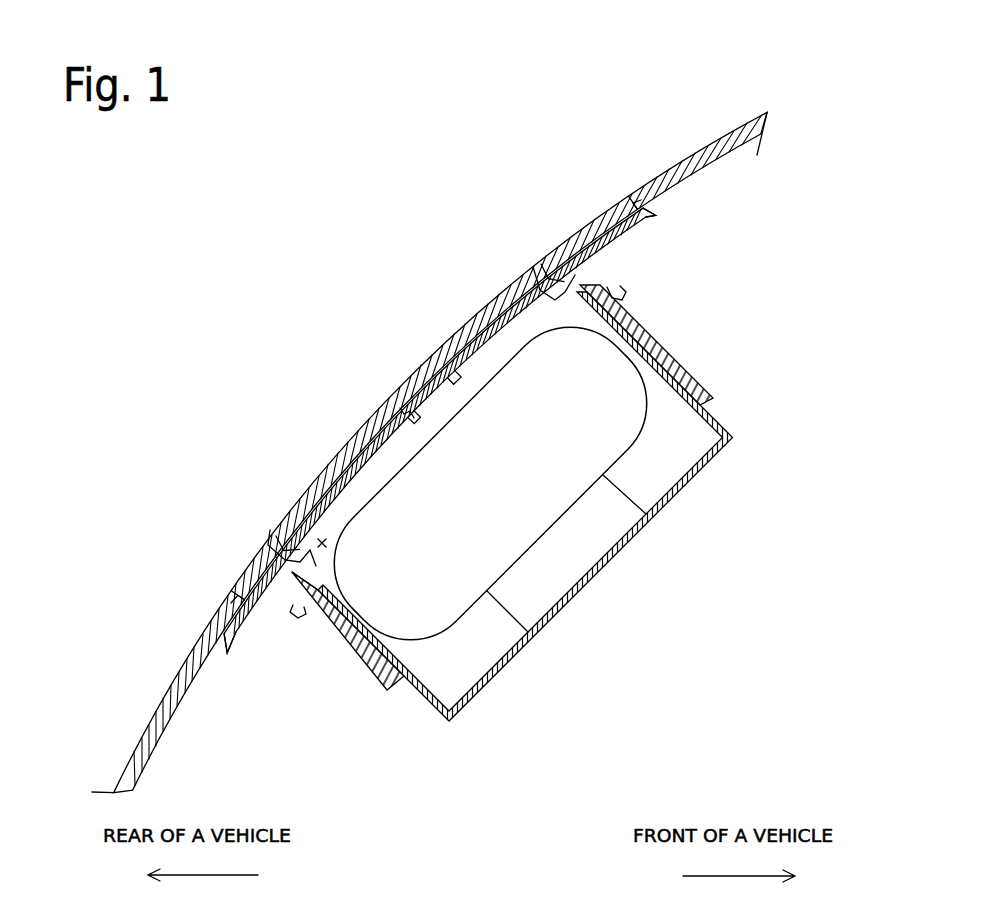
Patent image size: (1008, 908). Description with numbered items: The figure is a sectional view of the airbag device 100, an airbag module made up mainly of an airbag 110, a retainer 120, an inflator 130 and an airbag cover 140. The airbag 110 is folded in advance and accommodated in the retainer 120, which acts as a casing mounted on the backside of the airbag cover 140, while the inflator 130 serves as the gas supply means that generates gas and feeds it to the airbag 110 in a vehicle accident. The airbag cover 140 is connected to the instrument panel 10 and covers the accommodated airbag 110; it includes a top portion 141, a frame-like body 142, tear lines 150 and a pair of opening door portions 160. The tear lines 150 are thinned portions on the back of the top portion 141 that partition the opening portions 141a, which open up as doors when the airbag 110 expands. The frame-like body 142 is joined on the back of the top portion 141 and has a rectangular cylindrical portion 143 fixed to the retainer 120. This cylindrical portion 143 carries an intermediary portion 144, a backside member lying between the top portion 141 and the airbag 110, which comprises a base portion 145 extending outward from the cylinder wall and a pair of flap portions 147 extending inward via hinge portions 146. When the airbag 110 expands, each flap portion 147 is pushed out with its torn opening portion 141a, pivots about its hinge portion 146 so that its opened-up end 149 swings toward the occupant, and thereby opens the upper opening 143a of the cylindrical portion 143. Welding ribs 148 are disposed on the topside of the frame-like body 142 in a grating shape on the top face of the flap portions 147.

The airbag device 100 is at (381, 116).
The instrument panel 10 is at (723, 133).
The airbag 110 is at (472, 621).
The retainer 120 is at (705, 410).
The inflator 130 is at (593, 533).
The airbag cover 140 is at (262, 334).
The top portion 141 is at (227, 577).
The opening portions 141a is at (535, 267).
The frame-like body 142 is at (663, 332).
The cylindrical portion 143 is at (373, 668).
The upper opening 143a is at (322, 547).
The intermediary portion 144 is at (667, 222).
The base portion 145 is at (643, 217).
The hinge portion 146 is at (610, 284).
The flap portions 147 is at (520, 310).
The welding ribs 148 is at (382, 342).
The opened-up end 149 is at (433, 383).
The tear lines 150 is at (560, 267).
The opening door portions 160 is at (368, 364).